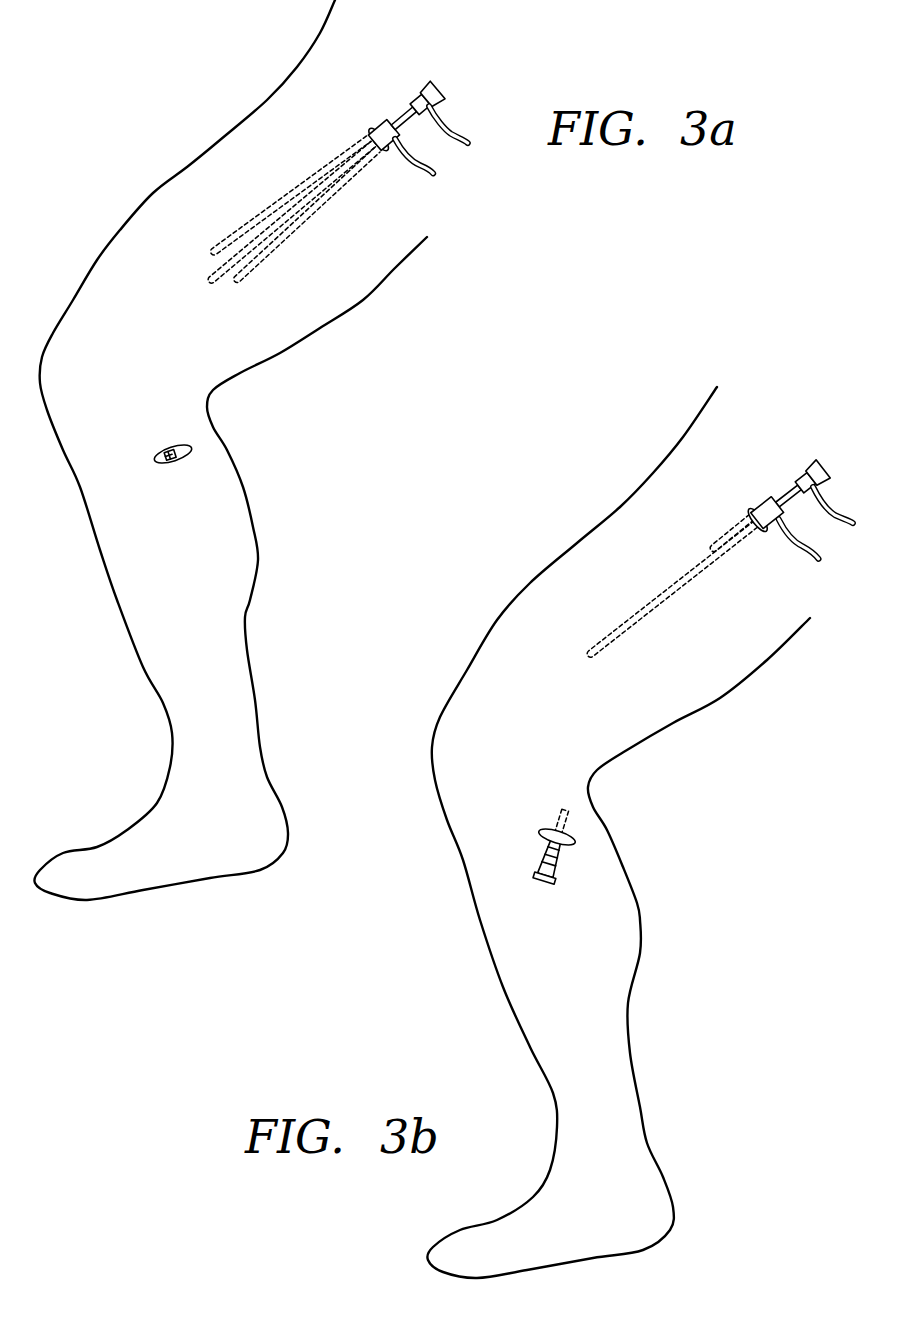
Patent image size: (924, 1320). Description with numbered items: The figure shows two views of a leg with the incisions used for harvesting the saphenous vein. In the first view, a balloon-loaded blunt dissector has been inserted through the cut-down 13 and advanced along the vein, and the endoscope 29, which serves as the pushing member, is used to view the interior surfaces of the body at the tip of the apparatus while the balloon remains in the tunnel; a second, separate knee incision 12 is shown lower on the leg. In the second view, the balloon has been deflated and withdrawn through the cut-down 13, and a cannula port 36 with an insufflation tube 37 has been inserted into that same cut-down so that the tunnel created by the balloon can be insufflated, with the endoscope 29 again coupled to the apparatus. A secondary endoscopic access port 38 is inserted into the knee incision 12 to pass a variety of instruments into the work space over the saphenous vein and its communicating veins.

In FIG. 3a, the knee incision 12 is at (194, 448).
In FIG. 3b, the knee incision 12 is at (573, 830).
In FIG. 3a, the cut-down 13 is at (368, 128).
In FIG. 3b, the cut-down 13 is at (767, 534).
In FIG. 3a, the endoscope 29 is at (445, 93).
In FIG. 3b, the endoscope 29 is at (835, 469).
In FIG. 3b, the cannula port 36 is at (757, 500).
In FIG. 3b, the insufflation tube 37 is at (823, 563).
In FIG. 3b, the secondary endoscopic access port 38 is at (580, 865).